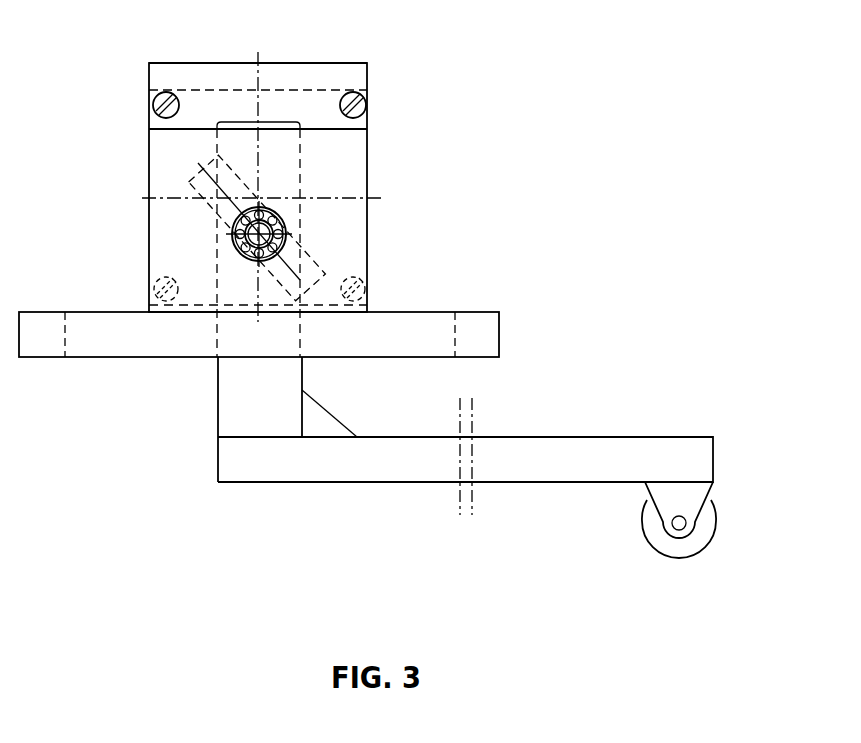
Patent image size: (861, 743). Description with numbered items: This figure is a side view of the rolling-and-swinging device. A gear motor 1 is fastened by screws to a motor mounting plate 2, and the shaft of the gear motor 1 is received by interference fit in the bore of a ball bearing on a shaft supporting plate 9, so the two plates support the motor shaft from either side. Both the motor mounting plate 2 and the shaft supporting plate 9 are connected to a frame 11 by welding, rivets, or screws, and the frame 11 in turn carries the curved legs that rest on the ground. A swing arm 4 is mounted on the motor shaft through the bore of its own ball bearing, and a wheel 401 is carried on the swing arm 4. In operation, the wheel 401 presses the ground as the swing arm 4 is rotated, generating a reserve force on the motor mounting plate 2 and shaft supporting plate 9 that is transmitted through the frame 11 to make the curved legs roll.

The gear motor 1 is at (358, 120).
The motor mounting plate 2 is at (358, 78).
The shaft supporting plate 9 is at (358, 158).
The frame 11 is at (377, 327).
The swing arm 4 is at (283, 417).
The wheel 401 is at (653, 527).